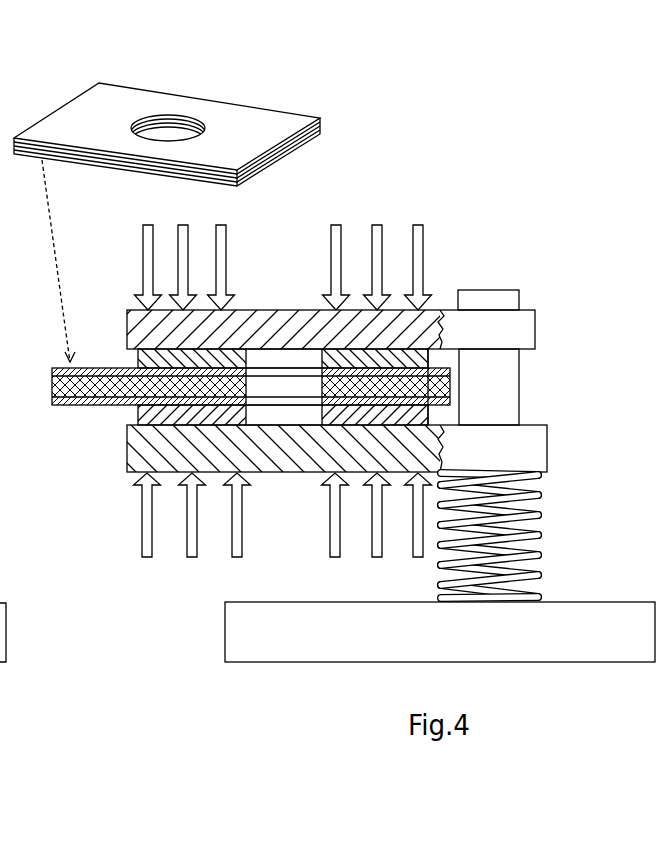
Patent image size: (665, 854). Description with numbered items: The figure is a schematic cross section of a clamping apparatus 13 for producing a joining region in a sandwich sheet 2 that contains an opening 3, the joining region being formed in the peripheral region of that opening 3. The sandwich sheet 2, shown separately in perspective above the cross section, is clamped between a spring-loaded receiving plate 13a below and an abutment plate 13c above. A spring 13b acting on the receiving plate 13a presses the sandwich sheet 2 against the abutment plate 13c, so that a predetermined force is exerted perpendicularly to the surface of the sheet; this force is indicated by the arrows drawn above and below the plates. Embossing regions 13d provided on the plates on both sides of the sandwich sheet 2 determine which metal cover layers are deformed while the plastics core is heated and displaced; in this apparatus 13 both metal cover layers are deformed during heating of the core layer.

The sandwich sheet 2 is at (243, 118).
The opening 3 is at (170, 137).
The clamping apparatus 13 is at (520, 378).
The receiving plate 13a is at (288, 452).
The spring 13b is at (557, 478).
The abutment plate 13c is at (287, 318).
The embossing regions 13d is at (137, 358).